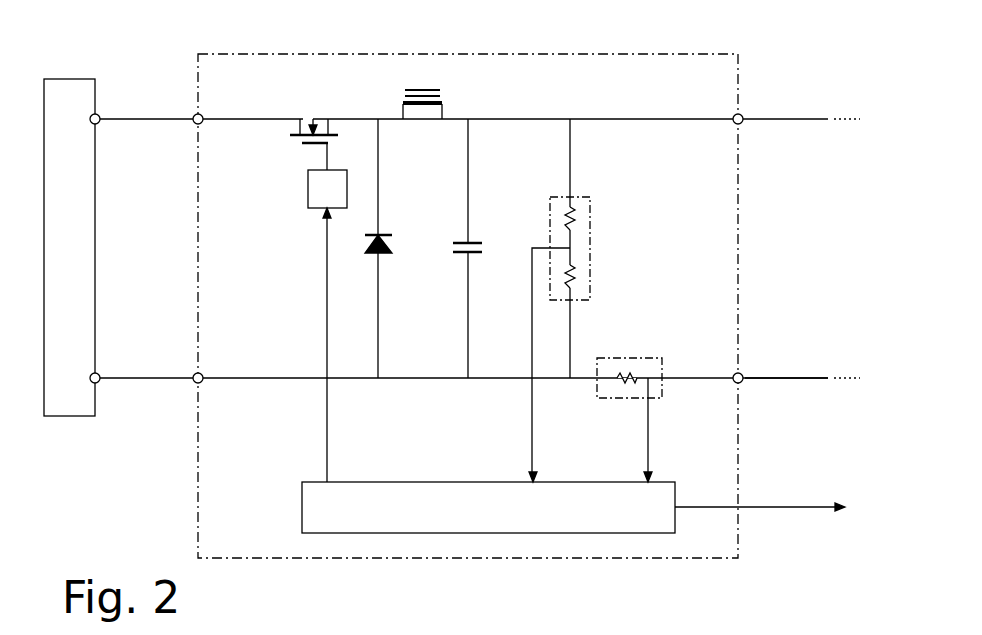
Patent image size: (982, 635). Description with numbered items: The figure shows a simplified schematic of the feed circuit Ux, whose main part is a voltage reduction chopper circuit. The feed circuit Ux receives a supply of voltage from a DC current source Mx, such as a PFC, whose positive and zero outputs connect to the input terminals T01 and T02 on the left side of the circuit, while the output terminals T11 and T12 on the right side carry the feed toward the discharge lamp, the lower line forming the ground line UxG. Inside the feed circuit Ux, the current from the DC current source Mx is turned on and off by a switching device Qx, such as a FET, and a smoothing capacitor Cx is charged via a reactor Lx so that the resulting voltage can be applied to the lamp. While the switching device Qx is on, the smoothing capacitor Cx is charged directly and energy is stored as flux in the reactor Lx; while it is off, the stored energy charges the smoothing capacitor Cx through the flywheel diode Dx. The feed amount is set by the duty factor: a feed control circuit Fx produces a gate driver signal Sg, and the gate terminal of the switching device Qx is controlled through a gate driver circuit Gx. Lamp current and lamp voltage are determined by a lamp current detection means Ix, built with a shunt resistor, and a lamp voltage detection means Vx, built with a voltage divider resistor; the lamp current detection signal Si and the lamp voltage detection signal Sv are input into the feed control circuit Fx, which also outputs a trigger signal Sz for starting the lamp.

The DC current source Mx is at (72, 247).
The first input terminal T01 is at (195, 114).
The second input terminal T02 is at (195, 383).
The first output terminal T11 is at (745, 114).
The second output terminal T12 is at (745, 383).
The feed circuit Ux is at (740, 551).
The ground line of converter unit UxG is at (815, 374).
The switching device Qx is at (299, 138).
The gate driver circuit Gx is at (309, 211).
The gate driver signal Sg is at (327, 432).
The flywheel diode Dx is at (387, 256).
The reactor Lx is at (420, 112).
The smoothing capacitor Cx is at (459, 243).
The lamp voltage detection means Vx is at (591, 230).
The voltage sense signal Sv is at (533, 432).
The lamp current detection means Ix is at (646, 357).
The lamp current detection signal Si is at (648, 432).
The feed control circuit Fx is at (488, 507).
The trigger signal Sz is at (815, 503).